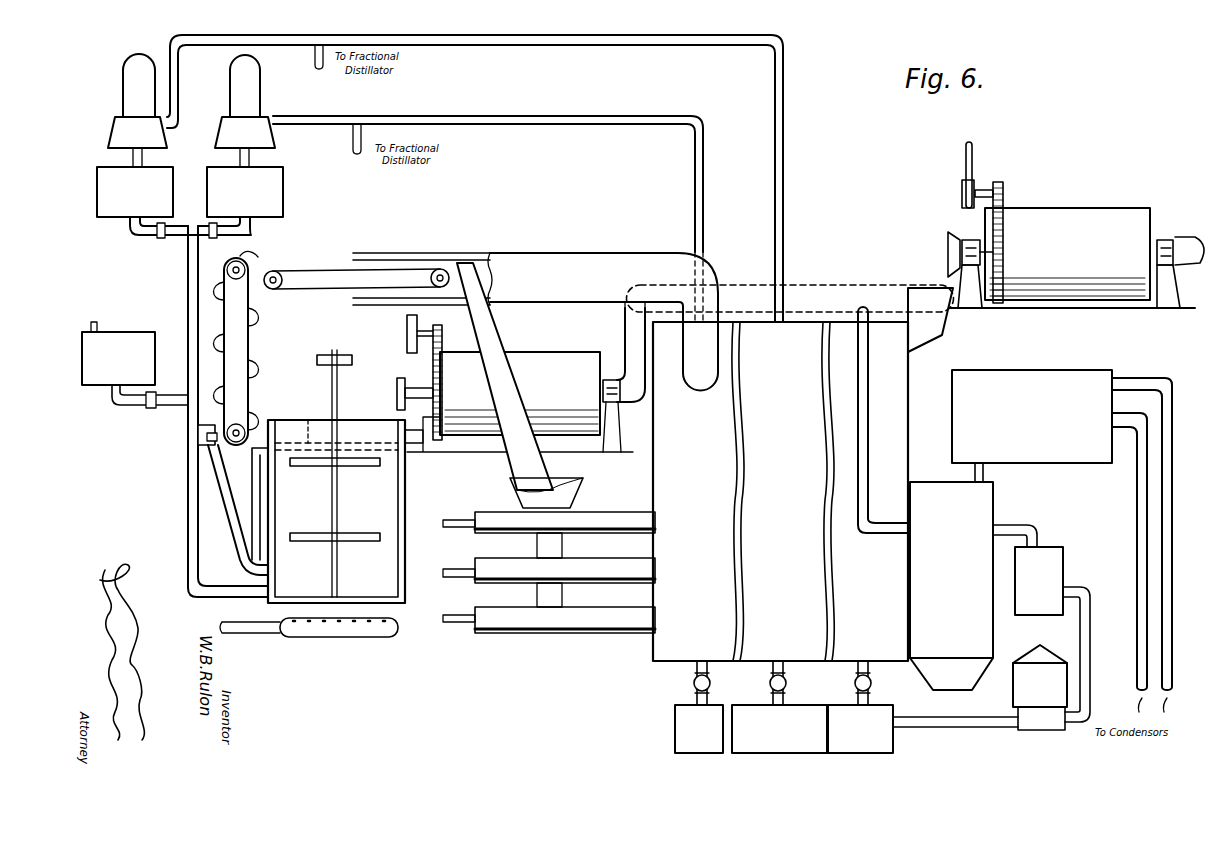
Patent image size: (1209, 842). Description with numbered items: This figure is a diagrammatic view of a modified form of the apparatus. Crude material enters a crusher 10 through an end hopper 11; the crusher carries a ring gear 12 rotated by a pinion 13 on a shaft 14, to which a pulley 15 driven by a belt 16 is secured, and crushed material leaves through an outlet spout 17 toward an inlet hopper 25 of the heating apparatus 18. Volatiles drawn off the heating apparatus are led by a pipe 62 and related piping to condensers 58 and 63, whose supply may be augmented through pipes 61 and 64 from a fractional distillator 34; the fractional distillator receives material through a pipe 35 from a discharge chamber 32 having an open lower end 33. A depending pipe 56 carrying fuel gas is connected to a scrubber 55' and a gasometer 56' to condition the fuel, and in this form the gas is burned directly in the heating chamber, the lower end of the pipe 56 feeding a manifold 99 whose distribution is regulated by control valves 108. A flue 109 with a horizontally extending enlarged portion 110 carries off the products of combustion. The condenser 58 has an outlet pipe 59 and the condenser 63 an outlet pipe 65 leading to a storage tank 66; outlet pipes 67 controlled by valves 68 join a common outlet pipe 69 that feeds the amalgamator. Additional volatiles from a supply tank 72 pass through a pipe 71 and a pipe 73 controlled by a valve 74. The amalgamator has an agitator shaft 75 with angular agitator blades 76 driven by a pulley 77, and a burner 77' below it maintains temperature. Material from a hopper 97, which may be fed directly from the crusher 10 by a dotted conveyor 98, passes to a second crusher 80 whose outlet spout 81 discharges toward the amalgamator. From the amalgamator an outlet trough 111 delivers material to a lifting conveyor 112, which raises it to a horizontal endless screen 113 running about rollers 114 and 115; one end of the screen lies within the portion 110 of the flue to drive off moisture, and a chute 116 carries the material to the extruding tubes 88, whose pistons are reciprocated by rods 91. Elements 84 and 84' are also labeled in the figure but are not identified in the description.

The crusher 10 is at (1072, 258).
The end hopper 11 is at (1185, 237).
The ring gear 12 is at (1004, 246).
The pinion 13 is at (1005, 200).
The shaft 14 is at (988, 190).
The pulley 15 is at (962, 206).
The belt 16 is at (972, 165).
The outlet spout 17 is at (948, 263).
The heating apparatus 18 is at (812, 322).
The inlet hopper 25 is at (930, 340).
The discharge chamber 32 is at (951, 570).
The open lower end 33 is at (952, 690).
The fractional distillator 34 is at (1056, 372).
The pipe 35 is at (975, 473).
The scrubber 55' is at (1028, 570).
The pipe 56 is at (537, 284).
The gasometer 56' is at (1051, 658).
The condenser 58 is at (112, 73).
The outlet pipe 59 is at (133, 158).
The pipe 61 is at (1174, 618).
The pipe 62 is at (692, 116).
The condenser 63 is at (233, 80).
The pipe 64 is at (1137, 624).
The outlet pipe 65 is at (250, 160).
The storage tank 66 is at (190, 192).
The outlet pipes 67 is at (132, 232).
The valves 68 is at (160, 238).
The common outlet pipe 69 is at (199, 390).
The pipe 71 is at (96, 322).
The supply tank 72 is at (118, 358).
The pipe 73 is at (178, 408).
The valve 74 is at (110, 401).
The agitator shaft 75 is at (338, 526).
The agitator blades 76 is at (305, 533).
The pulley 77 is at (337, 462).
The burner 77' is at (309, 640).
The crusher 80 is at (530, 402).
The outlet spout 81 is at (397, 395).
The chute 84 is at (214, 500).
The outlet 84' is at (187, 448).
The extruding tubes 88 is at (596, 612).
The rod 91 is at (460, 606).
The hopper 97 is at (628, 320).
The conveyor 98 is at (806, 290).
The manifold 99 is at (846, 729).
The control valves 108 is at (790, 682).
The flue 109 is at (716, 390).
The horizontally extending enlarged portion 110 is at (535, 258).
The outlet trough 111 is at (311, 421).
The lifting conveyor 112 is at (249, 392).
The horizontal endless screen 113 is at (322, 271).
The roller 114 is at (275, 272).
The roller 115 is at (441, 268).
The chute 116 is at (548, 478).